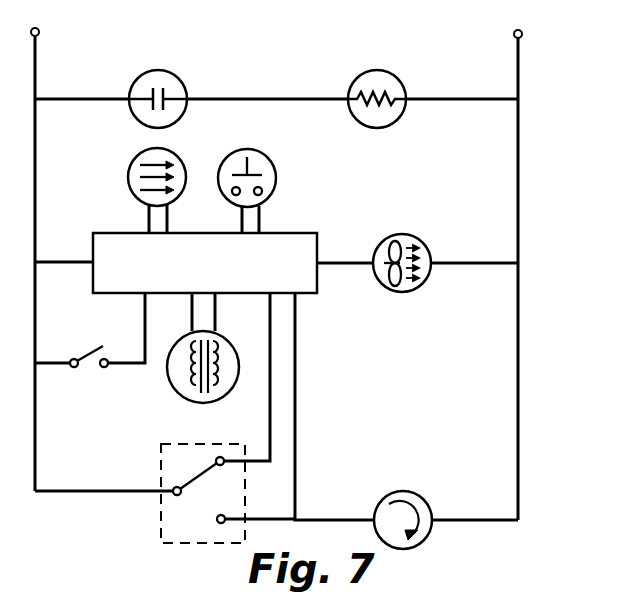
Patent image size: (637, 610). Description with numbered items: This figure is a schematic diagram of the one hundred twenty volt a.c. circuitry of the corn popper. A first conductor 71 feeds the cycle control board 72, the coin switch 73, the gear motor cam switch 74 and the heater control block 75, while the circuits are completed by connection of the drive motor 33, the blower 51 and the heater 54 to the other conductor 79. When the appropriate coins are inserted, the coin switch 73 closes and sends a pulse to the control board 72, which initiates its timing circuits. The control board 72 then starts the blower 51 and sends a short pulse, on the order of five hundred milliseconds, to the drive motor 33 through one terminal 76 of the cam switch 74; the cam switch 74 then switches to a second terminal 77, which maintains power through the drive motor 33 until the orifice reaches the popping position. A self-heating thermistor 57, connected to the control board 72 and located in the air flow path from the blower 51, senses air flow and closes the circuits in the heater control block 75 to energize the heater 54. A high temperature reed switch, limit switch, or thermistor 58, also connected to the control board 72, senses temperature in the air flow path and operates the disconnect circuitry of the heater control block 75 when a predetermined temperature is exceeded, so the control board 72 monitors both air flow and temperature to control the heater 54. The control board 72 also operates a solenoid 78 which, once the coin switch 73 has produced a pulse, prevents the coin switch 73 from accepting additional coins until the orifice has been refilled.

The first conductor 71 is at (39, 42).
The other conductor 79 is at (520, 67).
The heater control block 75 is at (160, 72).
The heater 54 is at (372, 72).
The self-heating thermistor 57 is at (168, 160).
The high temperature reed switch, limit switch, or thermistor 58 is at (259, 160).
The cycle control board 72 is at (118, 232).
The blower 51 is at (418, 242).
The coin switch 73 is at (102, 346).
The solenoid 78 is at (186, 384).
The gear motor cam switch 74 is at (160, 450).
The first terminal 76 is at (220, 457).
The second terminal 77 is at (225, 515).
The drive motor 33 is at (400, 494).